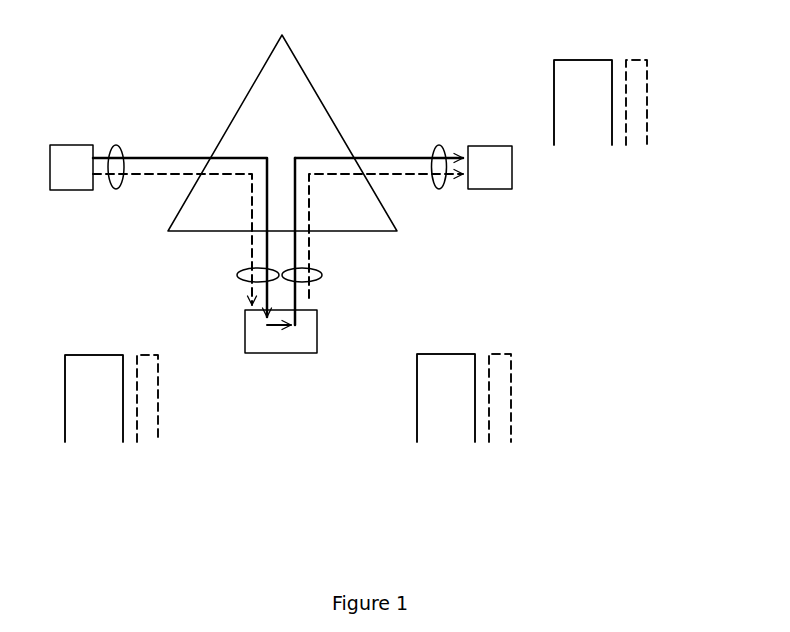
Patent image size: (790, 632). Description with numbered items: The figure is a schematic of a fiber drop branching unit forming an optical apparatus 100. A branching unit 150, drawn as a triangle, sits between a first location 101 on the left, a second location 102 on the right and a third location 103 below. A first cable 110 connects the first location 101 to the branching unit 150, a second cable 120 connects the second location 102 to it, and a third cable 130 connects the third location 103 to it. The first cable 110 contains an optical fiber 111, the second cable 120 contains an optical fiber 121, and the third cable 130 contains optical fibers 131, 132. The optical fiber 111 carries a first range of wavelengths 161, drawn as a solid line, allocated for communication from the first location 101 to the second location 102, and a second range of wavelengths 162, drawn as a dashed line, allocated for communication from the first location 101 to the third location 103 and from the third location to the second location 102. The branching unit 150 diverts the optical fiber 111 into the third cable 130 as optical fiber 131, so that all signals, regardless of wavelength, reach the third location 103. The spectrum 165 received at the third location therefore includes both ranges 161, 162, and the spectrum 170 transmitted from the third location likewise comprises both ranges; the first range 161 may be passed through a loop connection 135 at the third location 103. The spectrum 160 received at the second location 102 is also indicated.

The optical apparatus 100 is at (397, 95).
The first location 101 is at (65, 190).
The second location 102 is at (512, 173).
The third location 103 is at (302, 353).
The first cable 110 is at (152, 150).
The optical fiber 111 is at (113, 150).
The second cable 120 is at (367, 137).
The optical fiber 121 is at (437, 188).
The third cable 130 is at (245, 290).
The optical fiber 131 is at (237, 273).
The optical fiber 132 is at (321, 280).
The loop connection 135 is at (273, 327).
The branching unit 150 is at (247, 97).
The spectrum received at the second location 160 is at (642, 168).
The first range of wavelengths 161 is at (570, 60).
The second range of wavelengths 162 is at (638, 60).
The spectrum received at the third location 165 is at (145, 455).
The spectrum transmitted from the third location 170 is at (497, 455).